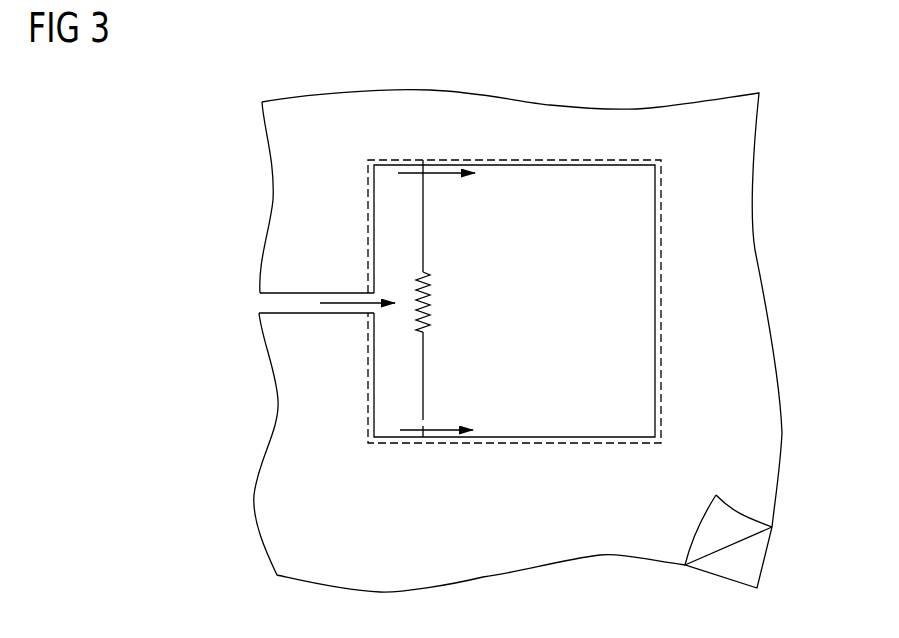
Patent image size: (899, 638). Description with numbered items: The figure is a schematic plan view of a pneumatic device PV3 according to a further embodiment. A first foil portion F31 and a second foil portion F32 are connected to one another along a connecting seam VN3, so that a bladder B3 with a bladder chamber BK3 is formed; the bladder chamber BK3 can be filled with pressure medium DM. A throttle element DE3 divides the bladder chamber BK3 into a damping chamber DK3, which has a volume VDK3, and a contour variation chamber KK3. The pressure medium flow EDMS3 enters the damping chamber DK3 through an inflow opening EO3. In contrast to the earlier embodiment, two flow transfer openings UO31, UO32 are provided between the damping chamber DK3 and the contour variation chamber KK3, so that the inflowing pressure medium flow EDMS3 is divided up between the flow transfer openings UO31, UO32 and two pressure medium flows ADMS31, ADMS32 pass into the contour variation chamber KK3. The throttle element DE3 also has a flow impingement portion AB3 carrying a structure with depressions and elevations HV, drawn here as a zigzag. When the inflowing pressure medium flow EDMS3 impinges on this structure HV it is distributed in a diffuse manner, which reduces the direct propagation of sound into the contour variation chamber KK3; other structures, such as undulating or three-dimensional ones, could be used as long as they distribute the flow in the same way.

The pneumatic device PV3 is at (238, 87).
The connecting seam VN3 is at (660, 193).
The bladder B3 is at (673, 247).
The bladder chamber BK3 is at (598, 323).
The pressure medium flow EDMS3 is at (333, 302).
The inflow opening EO3 is at (371, 296).
The pressure medium DM is at (263, 302).
The flow transfer opening UO32 is at (417, 182).
The flow transfer opening UO31 is at (417, 423).
The pressure medium flow ADMS32 is at (438, 173).
The pressure medium flow ADMS31 is at (442, 432).
The throttle element DE3 is at (425, 229).
The structure with depressions and elevations HV is at (448, 293).
The flow impingement portion AB3 is at (413, 318).
The volume VDK3 is at (395, 383).
The damping chamber DK3 is at (390, 444).
The contour variation chamber KK3 is at (637, 444).
The second foil portion F32 is at (727, 518).
The first foil portion F31 is at (753, 558).